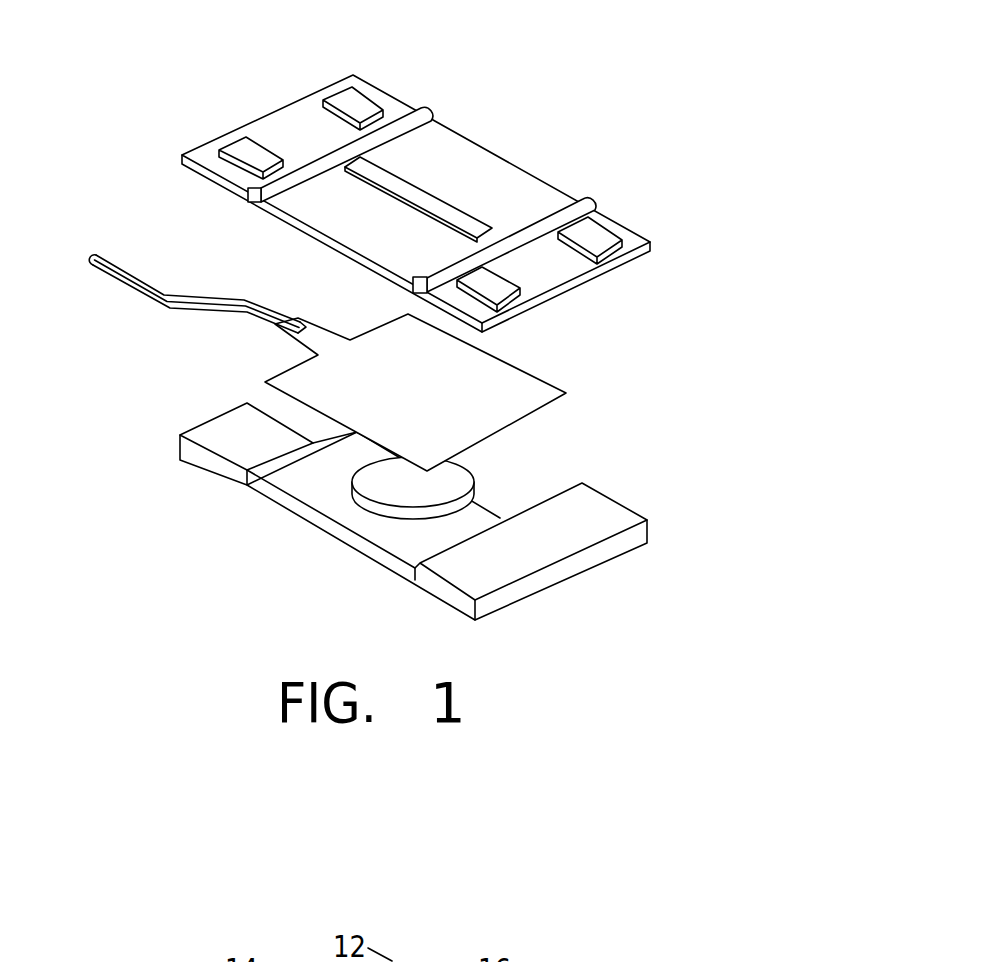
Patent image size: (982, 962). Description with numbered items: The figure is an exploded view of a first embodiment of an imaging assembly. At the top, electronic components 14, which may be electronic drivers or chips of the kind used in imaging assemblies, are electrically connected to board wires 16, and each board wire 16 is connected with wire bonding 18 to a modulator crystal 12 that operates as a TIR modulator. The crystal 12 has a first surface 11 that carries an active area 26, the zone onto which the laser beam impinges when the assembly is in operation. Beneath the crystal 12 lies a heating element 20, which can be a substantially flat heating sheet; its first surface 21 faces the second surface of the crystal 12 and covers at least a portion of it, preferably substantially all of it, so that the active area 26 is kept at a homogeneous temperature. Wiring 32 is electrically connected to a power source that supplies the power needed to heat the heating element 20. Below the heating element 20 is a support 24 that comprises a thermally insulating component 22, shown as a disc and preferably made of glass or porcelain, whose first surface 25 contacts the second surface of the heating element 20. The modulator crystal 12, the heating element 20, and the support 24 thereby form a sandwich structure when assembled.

The first surface 11 is at (485, 165).
The modulator crystal 12 is at (447, 155).
The electronic components 14 is at (350, 103).
The board wires 16 is at (560, 267).
The wire bonding 18 is at (426, 105).
The heating element 20 is at (482, 379).
The first surface 21 is at (510, 410).
The thermally insulating component 22 is at (383, 492).
The support 24 is at (577, 527).
The first surface 25 is at (415, 498).
The active area 26 is at (430, 202).
The wiring 32 is at (153, 297).